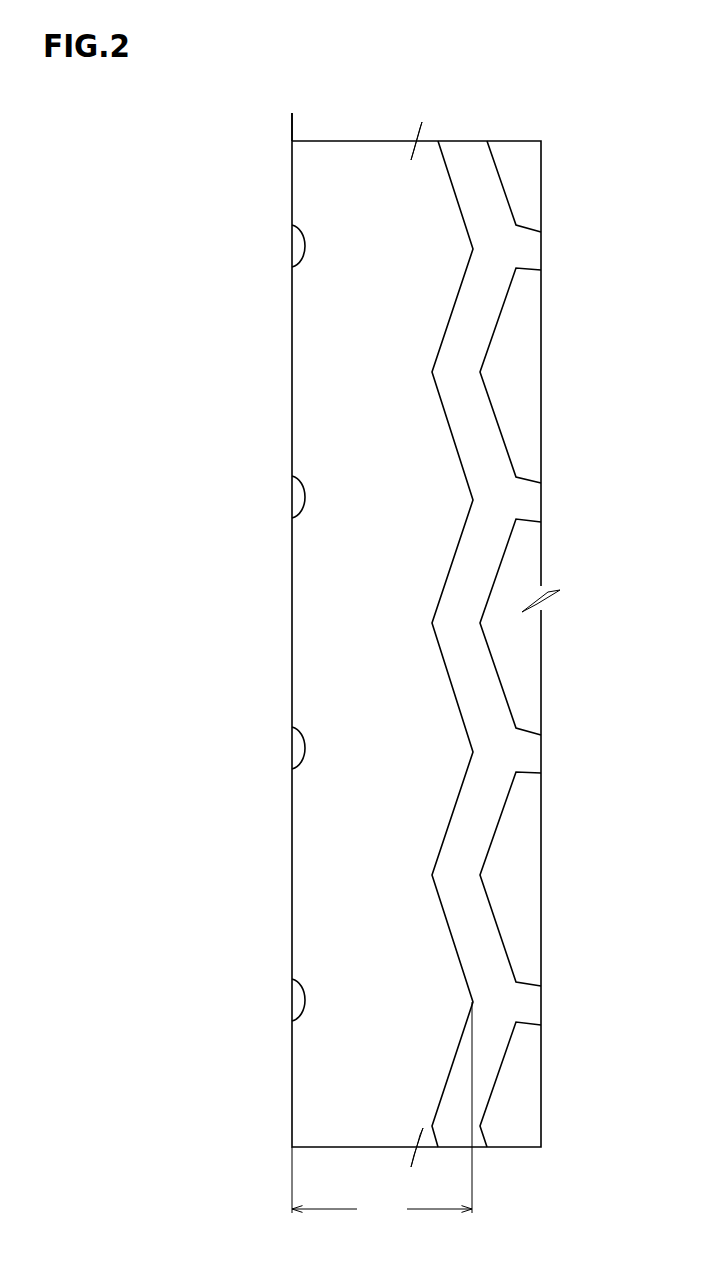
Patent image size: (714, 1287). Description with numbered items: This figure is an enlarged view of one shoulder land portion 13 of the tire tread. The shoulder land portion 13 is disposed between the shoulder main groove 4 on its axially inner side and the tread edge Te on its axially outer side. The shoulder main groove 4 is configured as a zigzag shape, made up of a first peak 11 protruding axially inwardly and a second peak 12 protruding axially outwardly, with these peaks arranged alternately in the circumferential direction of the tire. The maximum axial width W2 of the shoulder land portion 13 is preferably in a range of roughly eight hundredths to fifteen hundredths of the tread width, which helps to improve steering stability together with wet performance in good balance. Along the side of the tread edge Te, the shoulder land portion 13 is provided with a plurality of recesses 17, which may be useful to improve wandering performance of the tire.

The shoulder main groove 4 is at (474, 165).
The first peak 11 is at (506, 499).
The second peak 12 is at (466, 373).
The shoulder land portion 13 is at (357, 177).
The recesses 17 is at (292, 237).
The tread edge Te is at (288, 115).
The maximum axial width of the shoulder land portion W2 is at (382, 1112).